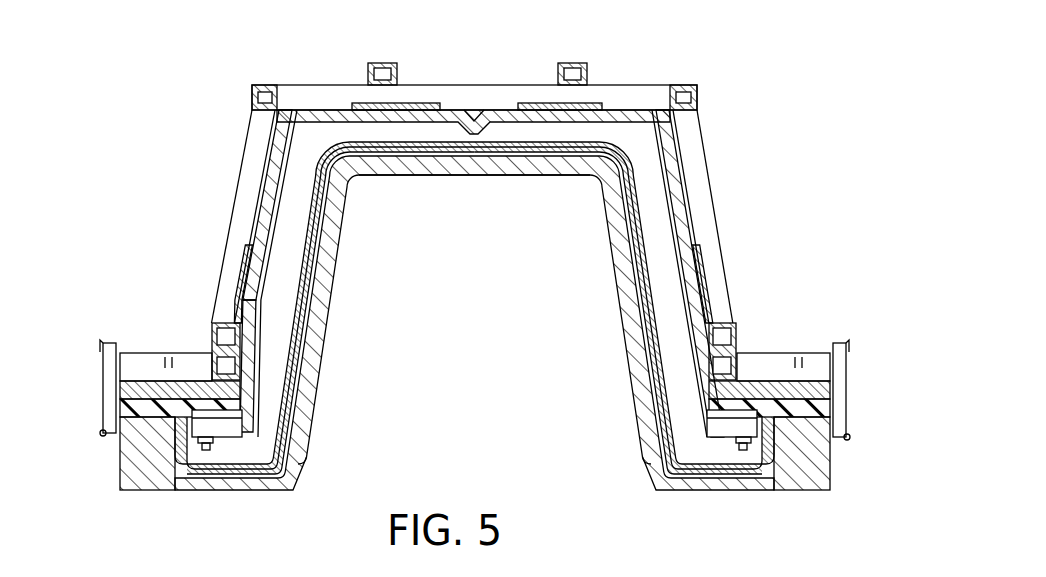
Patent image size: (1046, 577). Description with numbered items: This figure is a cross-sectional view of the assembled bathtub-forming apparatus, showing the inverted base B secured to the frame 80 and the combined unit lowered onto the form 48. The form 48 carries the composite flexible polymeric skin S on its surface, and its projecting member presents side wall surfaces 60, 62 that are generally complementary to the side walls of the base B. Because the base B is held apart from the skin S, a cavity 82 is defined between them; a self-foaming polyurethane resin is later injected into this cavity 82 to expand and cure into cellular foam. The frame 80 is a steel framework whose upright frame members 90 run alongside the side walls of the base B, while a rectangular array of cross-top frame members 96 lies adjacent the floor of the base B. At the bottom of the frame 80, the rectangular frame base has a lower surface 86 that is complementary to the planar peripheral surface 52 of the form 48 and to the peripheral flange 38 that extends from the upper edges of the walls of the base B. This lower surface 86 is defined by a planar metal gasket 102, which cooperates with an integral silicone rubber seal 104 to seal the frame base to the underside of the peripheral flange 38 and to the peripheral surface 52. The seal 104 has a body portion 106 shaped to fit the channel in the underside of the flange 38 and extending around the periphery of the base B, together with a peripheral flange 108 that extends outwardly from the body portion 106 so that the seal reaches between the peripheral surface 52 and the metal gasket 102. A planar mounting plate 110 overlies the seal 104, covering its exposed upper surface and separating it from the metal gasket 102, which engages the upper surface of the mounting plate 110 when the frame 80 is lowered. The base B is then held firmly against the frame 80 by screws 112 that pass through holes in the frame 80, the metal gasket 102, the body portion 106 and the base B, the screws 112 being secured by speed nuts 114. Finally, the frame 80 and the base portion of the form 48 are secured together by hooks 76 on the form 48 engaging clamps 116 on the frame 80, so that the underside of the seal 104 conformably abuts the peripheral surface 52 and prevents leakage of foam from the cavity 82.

The cross-top frame members 96 is at (633, 96).
The frame 80 is at (712, 92).
The base B is at (693, 181).
The upright frame members 90 is at (262, 148).
The cavity 82 is at (683, 352).
The form 48 is at (343, 233).
The peripheral surface 52 is at (494, 164).
The composite flexible polymeric skin S is at (620, 233).
The side wall surface 62 is at (323, 291).
The side wall surface 60 is at (627, 287).
The screws 112 is at (212, 362).
The planar metal gasket 102 is at (766, 352).
The clamps 116 is at (103, 343).
The lower surface 86 is at (843, 380).
The planar mounting plate 110 is at (847, 398).
The integral silicone rubber seal 104 is at (827, 440).
The peripheral flange 108 is at (803, 460).
The hooks 76 is at (118, 435).
The body portion 106 is at (725, 415).
The peripheral flange 38 is at (742, 452).
The speed nuts 114 is at (207, 452).